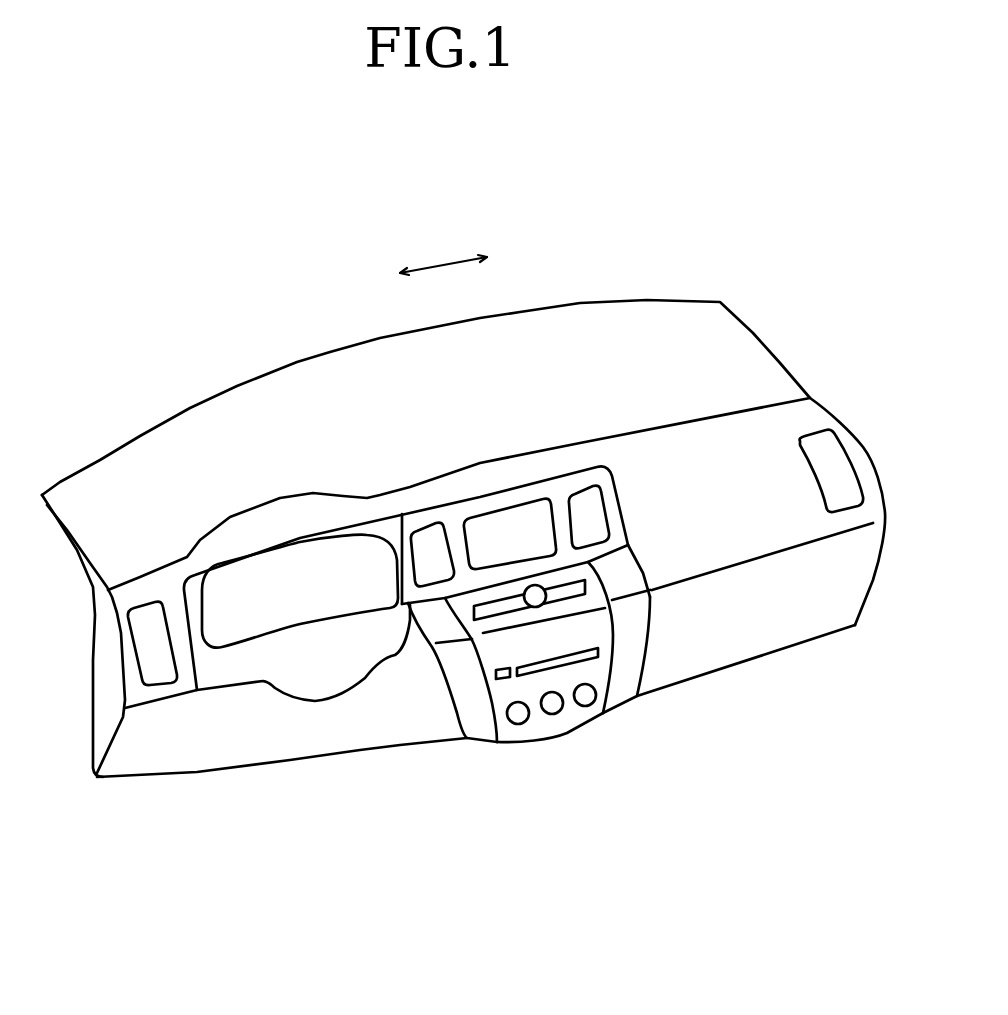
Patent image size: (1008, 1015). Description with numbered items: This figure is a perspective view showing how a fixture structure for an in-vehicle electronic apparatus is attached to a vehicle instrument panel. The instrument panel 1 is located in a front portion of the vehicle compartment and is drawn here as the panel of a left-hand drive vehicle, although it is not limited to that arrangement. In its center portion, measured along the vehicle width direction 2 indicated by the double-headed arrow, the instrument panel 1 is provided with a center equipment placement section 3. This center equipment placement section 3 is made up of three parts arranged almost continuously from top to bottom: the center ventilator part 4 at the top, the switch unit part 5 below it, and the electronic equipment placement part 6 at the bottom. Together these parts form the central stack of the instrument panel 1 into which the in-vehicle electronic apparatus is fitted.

The instrument panel 1 is at (267, 326).
The vehicle width direction 2 is at (447, 260).
The center equipment placement section 3 is at (577, 747).
The center ventilator part 4 is at (632, 488).
The switch unit part 5 is at (648, 558).
The electronic equipment placement part 6 is at (657, 643).